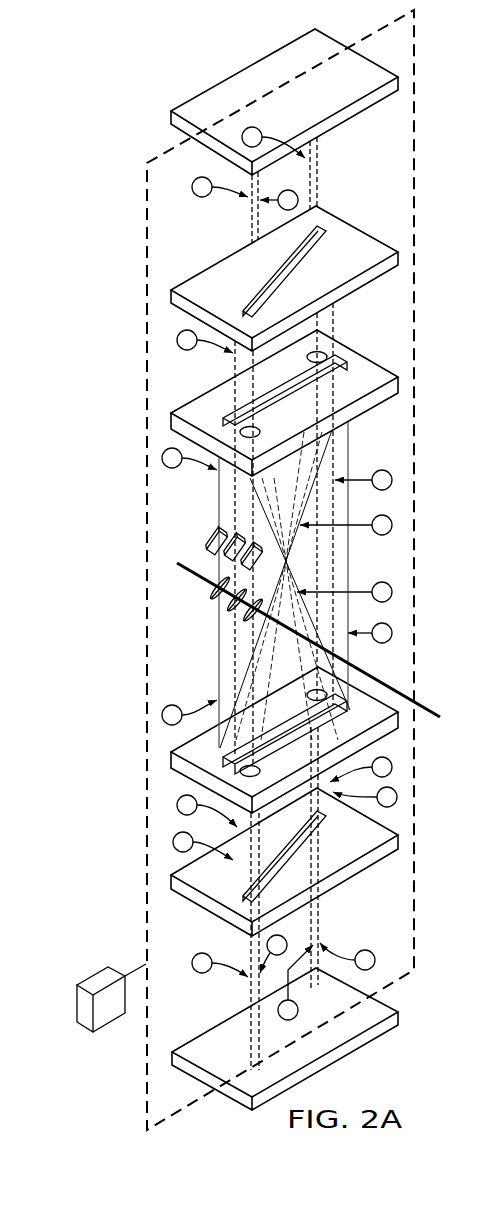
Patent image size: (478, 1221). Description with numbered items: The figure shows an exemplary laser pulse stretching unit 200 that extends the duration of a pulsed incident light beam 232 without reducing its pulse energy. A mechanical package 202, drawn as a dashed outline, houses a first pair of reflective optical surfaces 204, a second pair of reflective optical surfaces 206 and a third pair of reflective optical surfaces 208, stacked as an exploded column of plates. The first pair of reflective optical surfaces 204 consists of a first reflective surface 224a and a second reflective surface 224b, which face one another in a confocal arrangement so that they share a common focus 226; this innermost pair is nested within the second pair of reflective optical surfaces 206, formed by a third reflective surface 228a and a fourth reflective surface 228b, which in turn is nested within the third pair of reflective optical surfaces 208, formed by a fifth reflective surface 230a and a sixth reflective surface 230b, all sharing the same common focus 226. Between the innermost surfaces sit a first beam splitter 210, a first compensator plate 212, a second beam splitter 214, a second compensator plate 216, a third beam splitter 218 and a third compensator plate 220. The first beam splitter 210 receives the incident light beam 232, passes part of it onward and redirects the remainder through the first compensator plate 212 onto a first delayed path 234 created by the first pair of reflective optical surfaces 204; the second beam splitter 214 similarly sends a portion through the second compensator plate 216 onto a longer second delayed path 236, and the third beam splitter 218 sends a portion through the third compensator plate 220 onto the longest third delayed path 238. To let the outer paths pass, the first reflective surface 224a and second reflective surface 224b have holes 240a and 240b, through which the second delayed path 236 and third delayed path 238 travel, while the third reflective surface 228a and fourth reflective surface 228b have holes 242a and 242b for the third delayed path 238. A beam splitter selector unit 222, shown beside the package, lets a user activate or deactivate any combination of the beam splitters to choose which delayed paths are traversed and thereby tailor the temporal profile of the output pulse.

The laser pulse stretching unit 200 is at (152, 78).
The mechanical package 202 is at (143, 213).
The first pair of reflective optical surfaces 204 is at (276, 568).
The second pair of reflective optical surfaces 206 is at (242, 575).
The third pair of reflective optical surfaces 208 is at (260, 566).
The first beam splitter 210 is at (210, 596).
The first compensator plate 212 is at (220, 537).
The second beam splitter 214 is at (237, 613).
The second compensator plate 216 is at (228, 562).
The third beam splitter 218 is at (247, 618).
The third compensator plate 220 is at (260, 543).
The beam splitter selector unit 222 is at (110, 1023).
The first reflective surface 224a is at (170, 420).
The second reflective surface 224b is at (182, 778).
The common focus 226 is at (297, 563).
The third reflective surface 228a is at (172, 315).
The fourth reflective surface 228b is at (357, 875).
The fifth reflective surface 230a is at (170, 115).
The sixth reflective surface 230b is at (203, 1035).
The incident light beam 232 is at (180, 570).
The first delayed path 234 is at (348, 445).
The second delayed path 236 is at (335, 315).
The third delayed path 238 is at (315, 177).
The clear apertures (holes) in first reflective surface 240a is at (318, 356).
The clear aperture (hole) in second reflective surface 240b is at (320, 690).
The clear aperture (hole) in third reflective surface 242a is at (283, 263).
The clear aperture (hole) in fourth reflective surface 242b is at (240, 890).